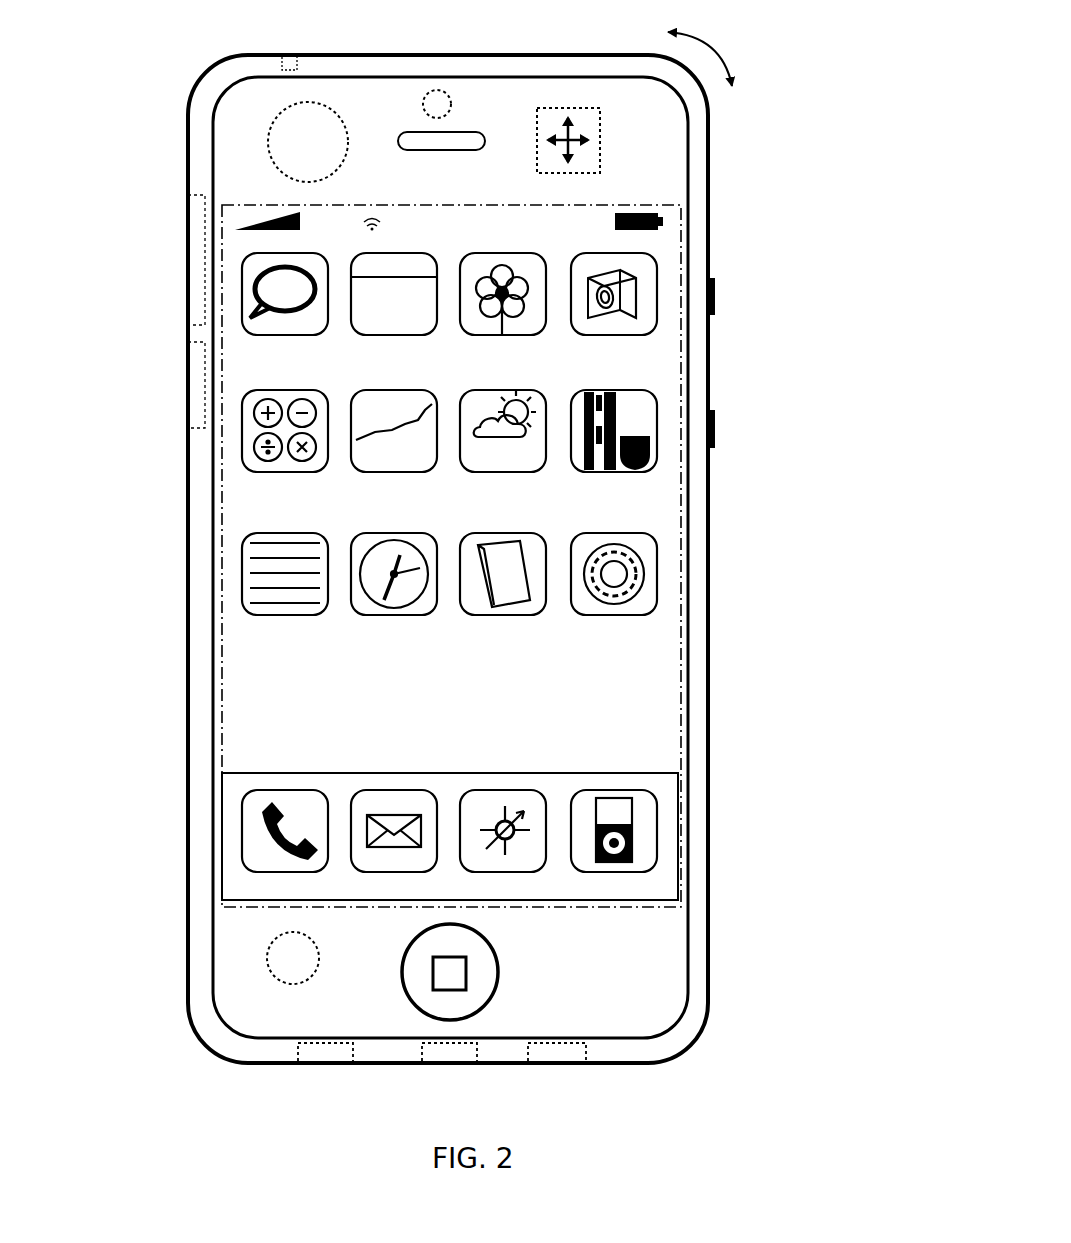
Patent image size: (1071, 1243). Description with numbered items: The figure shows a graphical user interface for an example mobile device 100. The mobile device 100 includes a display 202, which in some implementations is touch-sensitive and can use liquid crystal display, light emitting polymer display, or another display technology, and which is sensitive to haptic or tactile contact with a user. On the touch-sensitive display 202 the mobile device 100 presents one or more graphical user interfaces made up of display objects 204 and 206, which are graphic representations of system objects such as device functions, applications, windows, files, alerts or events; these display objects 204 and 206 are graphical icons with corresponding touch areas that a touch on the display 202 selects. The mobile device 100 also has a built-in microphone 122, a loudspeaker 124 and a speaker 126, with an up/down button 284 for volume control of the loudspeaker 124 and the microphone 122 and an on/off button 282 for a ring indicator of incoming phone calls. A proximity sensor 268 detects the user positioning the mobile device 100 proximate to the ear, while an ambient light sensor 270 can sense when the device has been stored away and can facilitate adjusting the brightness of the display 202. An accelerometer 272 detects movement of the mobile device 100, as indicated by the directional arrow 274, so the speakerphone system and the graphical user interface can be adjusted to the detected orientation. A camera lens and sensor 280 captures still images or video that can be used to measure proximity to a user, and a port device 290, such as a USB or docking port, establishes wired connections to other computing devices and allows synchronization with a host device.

The mobile device 100 is at (510, 55).
The directional arrow 274 is at (718, 60).
The proximity sensor 268 is at (268, 141).
The camera lens and sensor 280 is at (452, 104).
The speaker 126 is at (418, 150).
The accelerometer 272 is at (600, 145).
The display 202 is at (625, 206).
The display object 206 is at (663, 250).
The on/off button 282 is at (715, 298).
The up/down button 284 is at (715, 430).
The display object 204 is at (665, 790).
The ambient light sensor 270 is at (267, 958).
The microphone 122 is at (357, 1046).
The port device 290 is at (478, 1050).
The loudspeaker 124 is at (588, 1048).